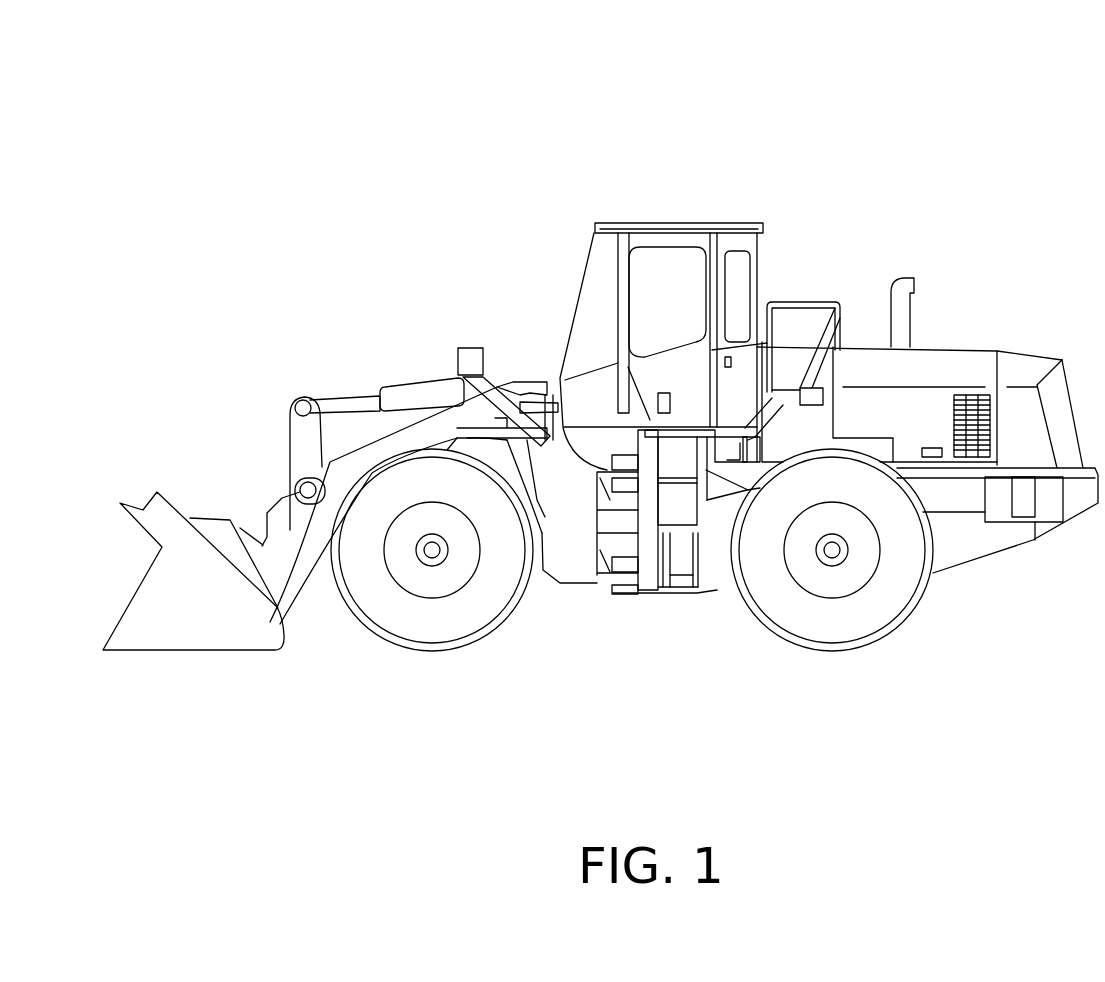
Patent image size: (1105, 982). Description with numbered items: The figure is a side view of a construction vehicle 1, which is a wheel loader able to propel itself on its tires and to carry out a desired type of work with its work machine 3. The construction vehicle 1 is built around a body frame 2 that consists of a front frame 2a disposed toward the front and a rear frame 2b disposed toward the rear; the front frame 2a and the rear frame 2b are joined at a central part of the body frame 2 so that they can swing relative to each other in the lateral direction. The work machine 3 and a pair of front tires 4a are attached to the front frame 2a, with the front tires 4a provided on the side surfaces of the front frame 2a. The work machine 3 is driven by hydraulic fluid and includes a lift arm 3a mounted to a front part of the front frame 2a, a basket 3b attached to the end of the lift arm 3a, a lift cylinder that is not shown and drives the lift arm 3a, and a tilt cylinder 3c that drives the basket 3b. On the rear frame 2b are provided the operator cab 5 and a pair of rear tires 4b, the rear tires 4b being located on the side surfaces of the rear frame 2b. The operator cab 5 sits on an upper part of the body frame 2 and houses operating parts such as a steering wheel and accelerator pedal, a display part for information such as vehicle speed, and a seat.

The construction vehicle 1 is at (893, 137).
The body frame 2 is at (660, 612).
The front frame 2a is at (575, 555).
The rear frame 2b is at (723, 557).
The work machine 3 is at (330, 332).
The lift arm 3a is at (388, 455).
The basket 3b is at (147, 512).
The tilt cylinder 3c is at (393, 388).
The front tires 4a is at (442, 632).
The rear tires 4b is at (845, 632).
The operator cab 5 is at (690, 213).